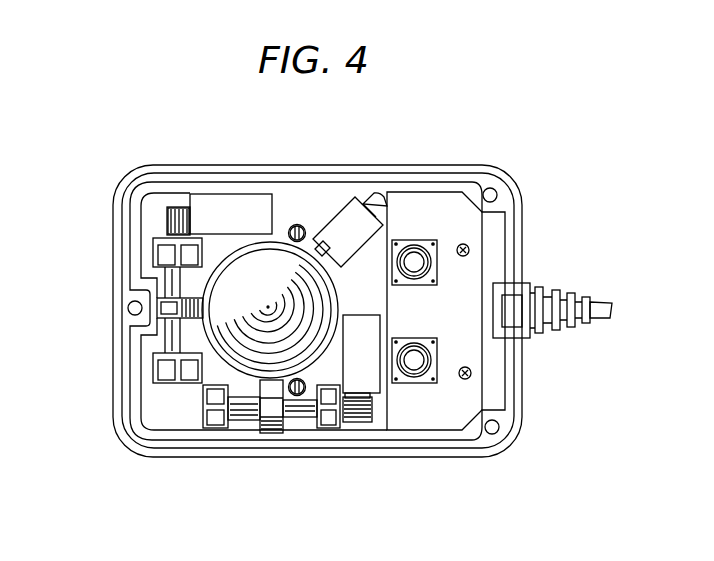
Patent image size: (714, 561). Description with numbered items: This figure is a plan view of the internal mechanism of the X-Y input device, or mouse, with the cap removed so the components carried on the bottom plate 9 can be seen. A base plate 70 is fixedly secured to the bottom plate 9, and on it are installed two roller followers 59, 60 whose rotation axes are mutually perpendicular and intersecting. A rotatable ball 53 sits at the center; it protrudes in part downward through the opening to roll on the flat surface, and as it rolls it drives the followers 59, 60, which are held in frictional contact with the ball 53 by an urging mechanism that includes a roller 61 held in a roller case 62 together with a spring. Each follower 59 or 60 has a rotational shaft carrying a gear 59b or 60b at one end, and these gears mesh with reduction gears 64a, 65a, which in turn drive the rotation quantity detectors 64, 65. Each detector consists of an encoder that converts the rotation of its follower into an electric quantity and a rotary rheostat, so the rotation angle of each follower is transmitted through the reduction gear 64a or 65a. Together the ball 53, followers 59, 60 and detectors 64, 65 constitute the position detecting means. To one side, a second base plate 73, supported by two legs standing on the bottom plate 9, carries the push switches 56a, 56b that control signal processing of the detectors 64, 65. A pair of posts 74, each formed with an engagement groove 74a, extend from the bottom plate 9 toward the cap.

The bottom plate 9 is at (488, 167).
The rotatable ball 53 is at (236, 352).
The push switch 56a is at (414, 262).
The push switch 56b is at (414, 360).
The roller follower 59 is at (155, 310).
The gear 59b is at (166, 222).
The roller follower 60 is at (268, 432).
The gear 60b is at (349, 421).
The roller 61 is at (335, 212).
The roller case 62 is at (372, 195).
The rotation quantity detector 64 is at (222, 194).
The reduction gear 64a is at (180, 207).
The rotation quantity detector 65 is at (368, 386).
The reduction gear 65a is at (360, 401).
The base plate 70 is at (147, 403).
The second base plate 73 is at (473, 266).
The post 74 is at (294, 228).
The engagement groove 74a is at (300, 228).